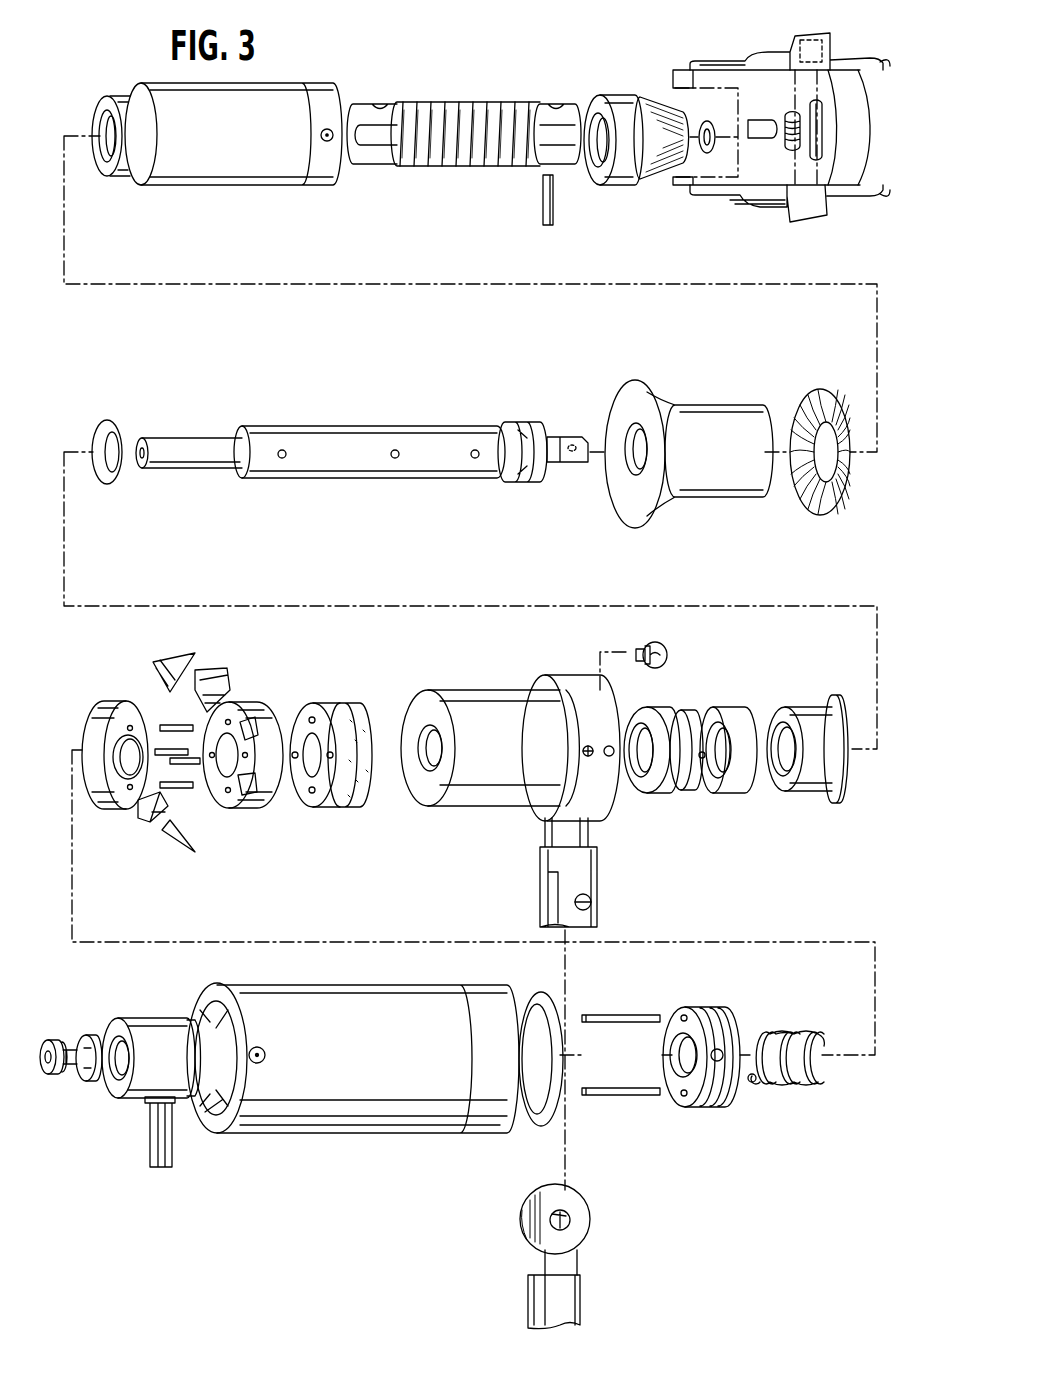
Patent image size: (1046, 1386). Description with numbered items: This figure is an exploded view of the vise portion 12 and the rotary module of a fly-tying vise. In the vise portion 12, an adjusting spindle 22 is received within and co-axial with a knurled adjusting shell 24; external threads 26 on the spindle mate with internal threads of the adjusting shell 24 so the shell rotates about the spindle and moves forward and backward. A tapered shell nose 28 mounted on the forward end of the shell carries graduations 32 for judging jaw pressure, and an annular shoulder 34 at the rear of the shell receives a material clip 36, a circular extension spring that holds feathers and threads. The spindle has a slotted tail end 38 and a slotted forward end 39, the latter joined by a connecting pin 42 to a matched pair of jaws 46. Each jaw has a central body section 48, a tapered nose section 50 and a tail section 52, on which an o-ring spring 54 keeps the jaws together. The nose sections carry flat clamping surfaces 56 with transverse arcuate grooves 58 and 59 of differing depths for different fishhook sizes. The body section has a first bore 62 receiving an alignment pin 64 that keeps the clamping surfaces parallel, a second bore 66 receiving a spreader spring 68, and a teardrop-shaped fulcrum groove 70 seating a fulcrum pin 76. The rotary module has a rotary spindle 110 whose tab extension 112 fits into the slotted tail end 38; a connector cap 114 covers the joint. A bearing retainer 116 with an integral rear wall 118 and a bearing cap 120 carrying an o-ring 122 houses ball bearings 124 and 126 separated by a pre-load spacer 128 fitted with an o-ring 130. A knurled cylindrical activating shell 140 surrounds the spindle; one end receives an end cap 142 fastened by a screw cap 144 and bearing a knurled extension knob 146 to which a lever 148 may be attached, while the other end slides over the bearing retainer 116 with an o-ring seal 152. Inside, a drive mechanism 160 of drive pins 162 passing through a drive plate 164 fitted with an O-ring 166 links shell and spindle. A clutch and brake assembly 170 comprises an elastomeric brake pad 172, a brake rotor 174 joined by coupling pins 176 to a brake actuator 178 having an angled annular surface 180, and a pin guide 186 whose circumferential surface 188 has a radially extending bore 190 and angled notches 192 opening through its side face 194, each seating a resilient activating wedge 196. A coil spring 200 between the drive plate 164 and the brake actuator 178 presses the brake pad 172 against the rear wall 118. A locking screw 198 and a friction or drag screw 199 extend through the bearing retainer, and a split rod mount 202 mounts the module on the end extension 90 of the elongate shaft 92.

The vise portion 12 is at (287, 204).
The adjusting spindle 22 is at (450, 167).
The knurled adjusting shell 24 is at (278, 100).
The external threads 26 is at (410, 103).
The tapered shell nose 28 is at (622, 188).
The graduations 32 is at (632, 96).
The annular shoulder 34 is at (118, 103).
The material clip 36 is at (800, 392).
The slotted tail end 38 is at (370, 167).
The slotted forward end 39 is at (560, 104).
The connecting pin 42 is at (544, 205).
The jaws 46 is at (795, 50).
The central body section 48 is at (810, 45).
The tapered nose section 50 is at (838, 62).
The tail section 52 is at (697, 198).
The o-ring spring 54 is at (678, 177).
The clamping surfaces 56 is at (886, 68).
The arcuate groove 58 is at (866, 75).
The arcuate groove 59 is at (853, 72).
The first bore 62 is at (828, 210).
The alignment pin 64 is at (828, 50).
The second bore 66 is at (787, 212).
The spreader spring 68 is at (787, 112).
The fulcrum groove 70 is at (748, 208).
The fulcrum pin 76 is at (748, 122).
The end extension 90 is at (578, 1205).
The elongate shaft 92 is at (572, 1290).
The rotary spindle 110 is at (340, 433).
The tab extension 112 is at (564, 464).
The connector cap 114 is at (706, 410).
The bearing retainer 116 is at (573, 680).
The rear wall 118 is at (420, 698).
The bearing cap 120 is at (816, 806).
The o-ring 122 is at (117, 423).
The ball bearing 124 is at (730, 707).
The ball bearing 126 is at (652, 715).
The pre-load spacer 128 is at (682, 792).
The o-ring 130 is at (725, 793).
The knurled cylindrical activating shell 140 is at (326, 1112).
The end cap 142 is at (200, 1120).
The screw cap 144 is at (50, 1040).
The knurled extension knob 146 is at (170, 1020).
The lever 148 is at (152, 1138).
The o-ring seal 152 is at (545, 995).
The drive mechanism 160 is at (675, 1113).
The drive pins 162 is at (642, 1013).
The drive plate 164 is at (700, 1008).
The O-ring 166 is at (725, 1105).
The clutch and brake assembly 170 is at (236, 830).
The elastomeric brake pad 172 is at (353, 813).
The brake rotor 174 is at (313, 813).
The coupling pins 176 is at (157, 728).
The brake actuator 178 is at (103, 805).
The angled annular surface 180 is at (103, 733).
The pin guide 186 is at (252, 697).
The circumferential surface 188 is at (273, 760).
The radially extending bore 190 is at (272, 728).
The angled notches 192 is at (265, 792).
The side face 194 is at (223, 797).
The resilient activating wedge 196 is at (210, 668).
The locking screw 198 is at (660, 650).
The friction or drag screw 199 is at (610, 760).
The coil spring 200 is at (793, 1085).
The split rod mount 202 is at (582, 863).